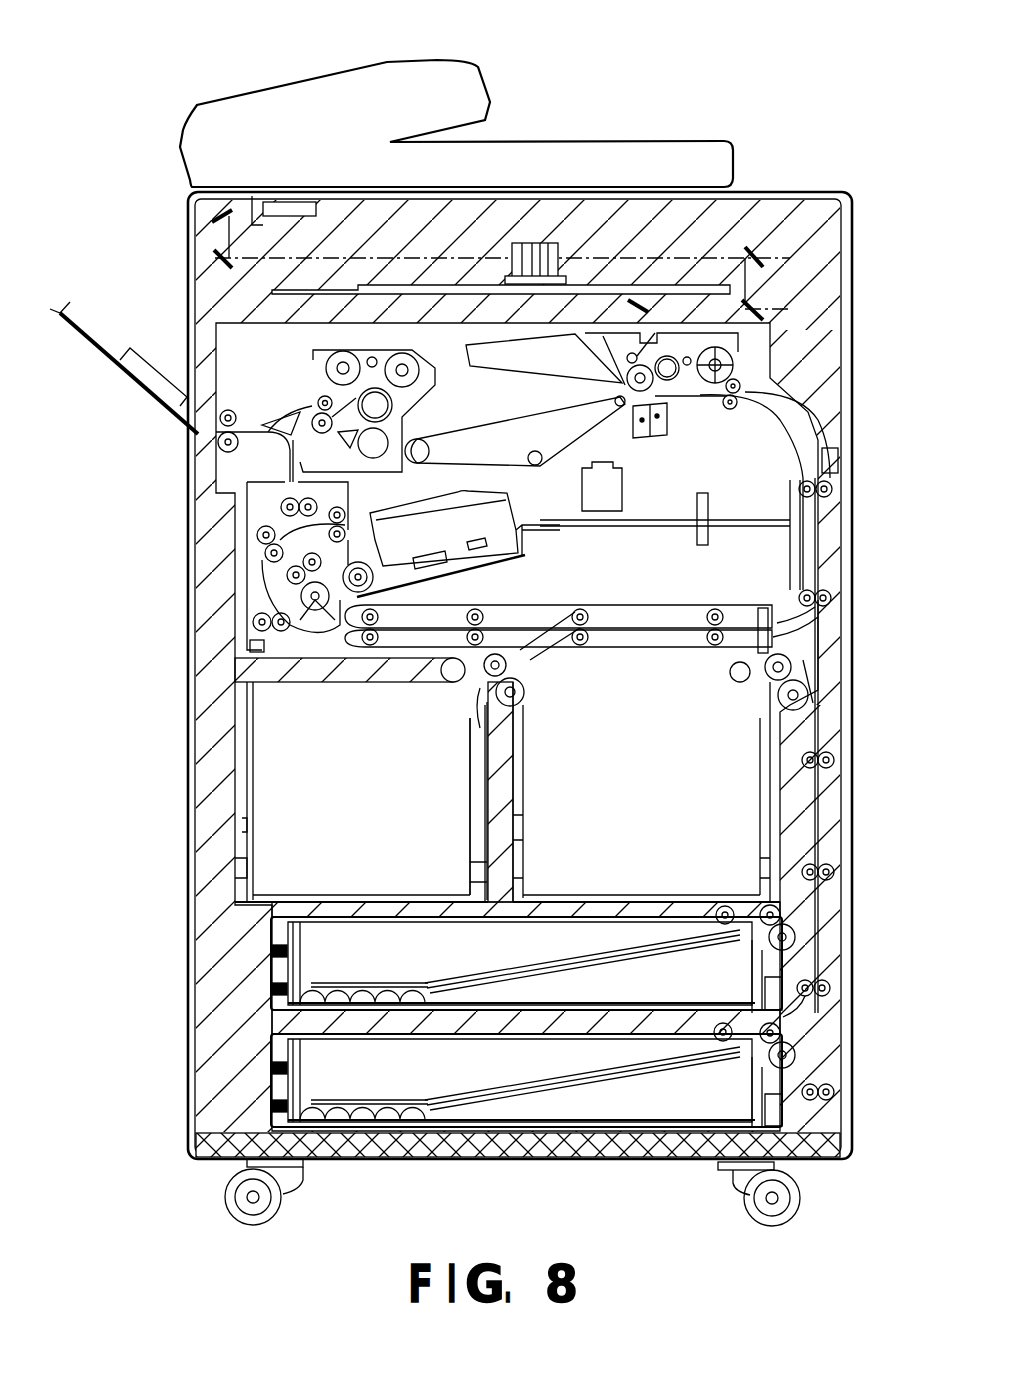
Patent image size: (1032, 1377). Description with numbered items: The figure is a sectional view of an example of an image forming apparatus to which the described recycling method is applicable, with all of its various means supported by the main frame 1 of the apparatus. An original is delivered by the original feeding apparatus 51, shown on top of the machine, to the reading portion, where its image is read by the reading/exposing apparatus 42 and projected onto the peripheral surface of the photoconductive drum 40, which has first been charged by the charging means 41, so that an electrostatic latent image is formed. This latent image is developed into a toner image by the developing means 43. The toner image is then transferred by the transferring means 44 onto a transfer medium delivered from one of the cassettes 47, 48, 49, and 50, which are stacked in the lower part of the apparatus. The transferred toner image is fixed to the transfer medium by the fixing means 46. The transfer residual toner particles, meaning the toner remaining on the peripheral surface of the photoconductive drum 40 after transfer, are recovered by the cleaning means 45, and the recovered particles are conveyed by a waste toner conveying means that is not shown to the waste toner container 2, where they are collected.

The main frame 1 is at (215, 577).
The waste toner container 2 is at (598, 510).
The photoconductive drum 40 is at (670, 400).
The charging means 41 is at (617, 350).
The reading/exposing apparatus 42 is at (722, 256).
The developing means 43 is at (738, 350).
The transferring means 44 is at (648, 438).
The cleaning means 45 is at (517, 370).
The fixing means 46 is at (313, 352).
The cassette 47 is at (278, 795).
The cassette 48 is at (730, 793).
The cassette 49 is at (318, 958).
The cassette 50 is at (325, 1073).
The original feeding apparatus 51 is at (383, 60).